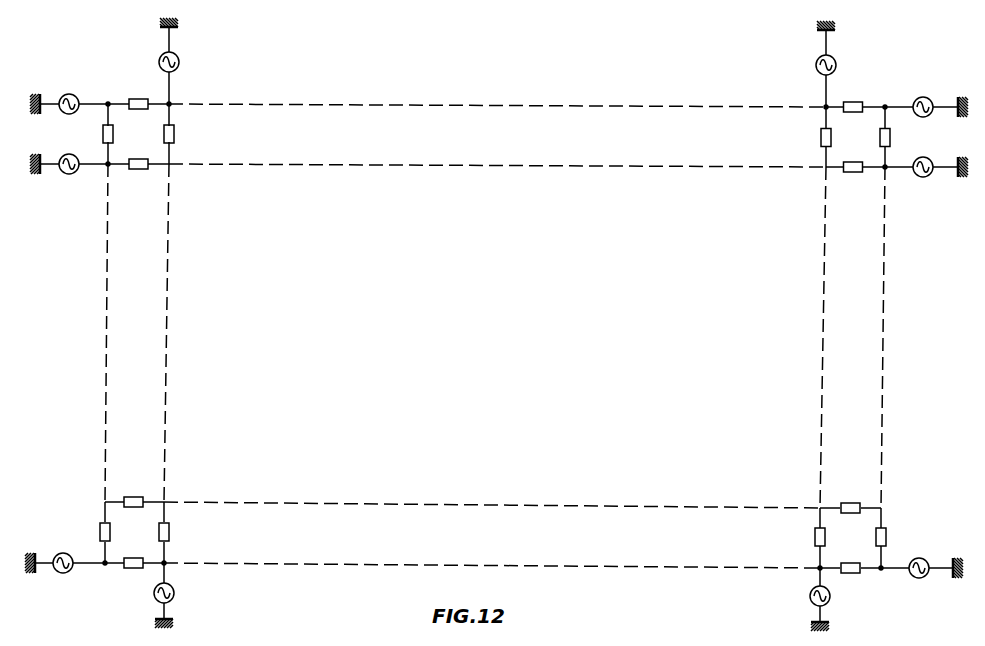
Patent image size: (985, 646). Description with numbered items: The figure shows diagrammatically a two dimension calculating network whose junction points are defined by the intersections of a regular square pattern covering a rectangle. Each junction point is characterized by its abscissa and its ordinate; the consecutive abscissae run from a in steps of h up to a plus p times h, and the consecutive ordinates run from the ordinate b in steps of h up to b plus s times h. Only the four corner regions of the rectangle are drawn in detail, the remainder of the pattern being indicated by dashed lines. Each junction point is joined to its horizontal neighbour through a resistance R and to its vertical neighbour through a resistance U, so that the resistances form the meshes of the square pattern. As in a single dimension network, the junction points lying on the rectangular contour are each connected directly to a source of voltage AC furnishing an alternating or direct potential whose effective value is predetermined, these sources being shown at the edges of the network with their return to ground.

The resistance R is at (135, 99).
The resistance U is at (178, 134).
The ordinate b is at (106, 106).
The source of voltage AC is at (62, 96).